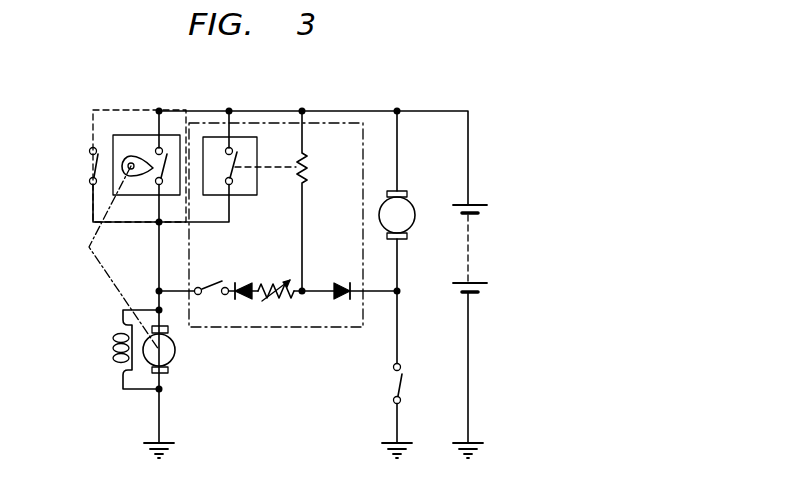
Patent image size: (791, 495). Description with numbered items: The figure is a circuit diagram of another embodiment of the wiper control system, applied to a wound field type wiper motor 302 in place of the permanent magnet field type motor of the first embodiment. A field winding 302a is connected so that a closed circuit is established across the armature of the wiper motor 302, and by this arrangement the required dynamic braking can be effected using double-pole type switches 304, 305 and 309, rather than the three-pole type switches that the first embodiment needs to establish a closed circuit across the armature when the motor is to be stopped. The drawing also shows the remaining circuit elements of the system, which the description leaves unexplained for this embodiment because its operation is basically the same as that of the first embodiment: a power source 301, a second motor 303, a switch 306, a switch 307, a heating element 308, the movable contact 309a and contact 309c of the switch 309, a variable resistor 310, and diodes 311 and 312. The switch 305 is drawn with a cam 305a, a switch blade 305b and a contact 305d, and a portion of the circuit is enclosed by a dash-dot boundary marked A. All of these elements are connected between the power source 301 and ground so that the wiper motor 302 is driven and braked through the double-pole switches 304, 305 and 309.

The control circuit portion A is at (363, 145).
The battery 301 is at (472, 244).
The wound field type wiper motor 302 is at (175, 367).
The field winding 302a is at (124, 349).
The motor 303 is at (410, 212).
The double-pole type switch 304 is at (89, 169).
The double-pole type switch 305 is at (108, 141).
The cam 305a is at (139, 182).
The switch blade 305b is at (168, 152).
The switch contact 305d is at (156, 149).
The switch 306 is at (403, 378).
The switch 307 is at (210, 294).
The relay coil 308 is at (307, 164).
The double-pole type switch 309 is at (223, 198).
The relay blade 309a is at (236, 172).
The relay contact 309c is at (238, 151).
The variable resistor 310 is at (285, 300).
The diode 311 is at (342, 300).
The diode 312 is at (248, 300).